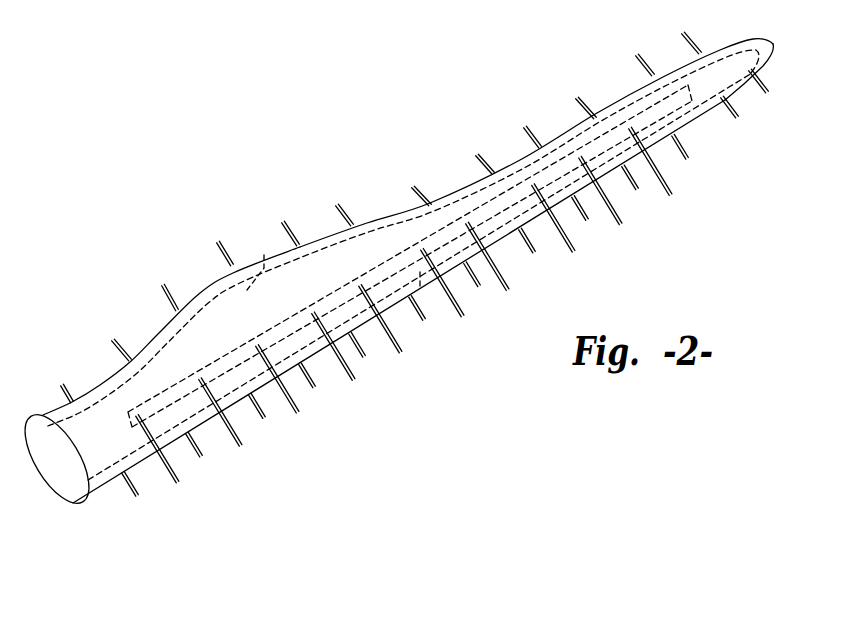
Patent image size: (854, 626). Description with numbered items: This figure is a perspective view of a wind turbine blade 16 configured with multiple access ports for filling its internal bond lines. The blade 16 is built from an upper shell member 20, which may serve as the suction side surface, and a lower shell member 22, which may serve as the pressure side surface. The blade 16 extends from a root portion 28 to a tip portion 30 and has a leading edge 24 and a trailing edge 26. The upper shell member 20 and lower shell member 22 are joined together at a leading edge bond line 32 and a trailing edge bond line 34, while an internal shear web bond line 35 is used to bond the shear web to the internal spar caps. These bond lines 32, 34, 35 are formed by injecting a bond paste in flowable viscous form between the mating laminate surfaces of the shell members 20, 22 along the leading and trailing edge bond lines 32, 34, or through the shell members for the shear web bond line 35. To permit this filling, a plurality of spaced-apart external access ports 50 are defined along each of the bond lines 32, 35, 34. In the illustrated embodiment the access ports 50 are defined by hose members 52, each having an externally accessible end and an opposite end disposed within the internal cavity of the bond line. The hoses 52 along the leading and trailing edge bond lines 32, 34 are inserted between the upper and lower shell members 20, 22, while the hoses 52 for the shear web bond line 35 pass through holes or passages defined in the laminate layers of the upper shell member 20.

The wind turbine blade 16 is at (367, 110).
The upper shell member 20 is at (223, 320).
The lower shell member 22 is at (265, 260).
The leading edge 24 is at (497, 247).
The trailing edge 26 is at (517, 162).
The root portion 28 is at (100, 420).
The tip portion 30 is at (748, 52).
The leading edge bond line 32 is at (420, 277).
The trailing edge bond line 34 is at (400, 224).
The internal shear web bond line 35 is at (347, 297).
The external access ports 50 is at (233, 416).
The hose members 52 is at (530, 127).